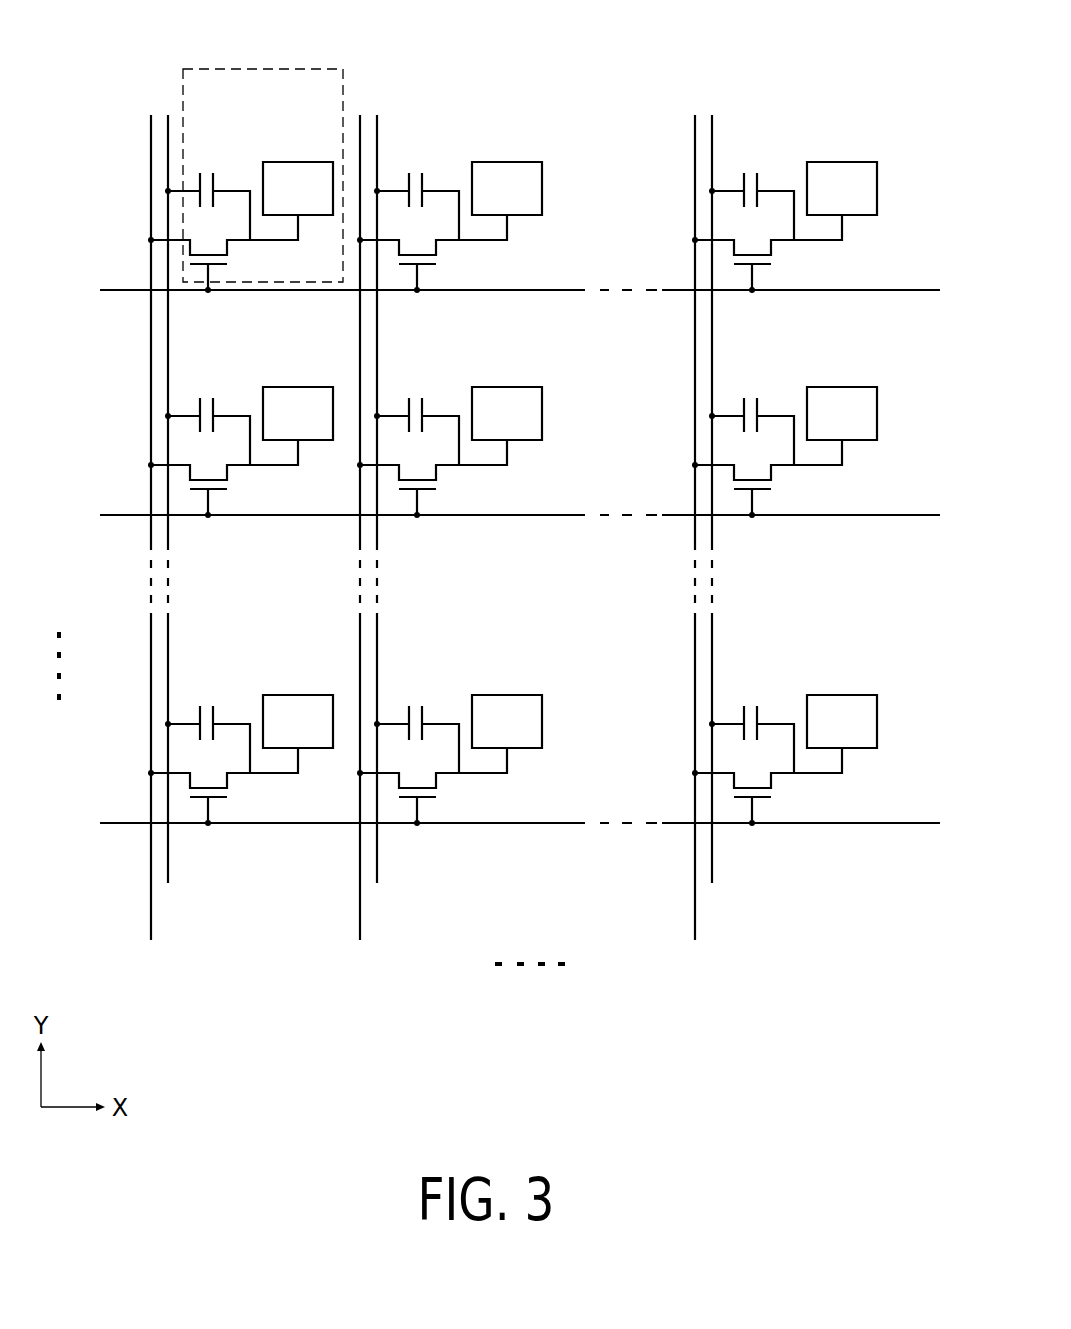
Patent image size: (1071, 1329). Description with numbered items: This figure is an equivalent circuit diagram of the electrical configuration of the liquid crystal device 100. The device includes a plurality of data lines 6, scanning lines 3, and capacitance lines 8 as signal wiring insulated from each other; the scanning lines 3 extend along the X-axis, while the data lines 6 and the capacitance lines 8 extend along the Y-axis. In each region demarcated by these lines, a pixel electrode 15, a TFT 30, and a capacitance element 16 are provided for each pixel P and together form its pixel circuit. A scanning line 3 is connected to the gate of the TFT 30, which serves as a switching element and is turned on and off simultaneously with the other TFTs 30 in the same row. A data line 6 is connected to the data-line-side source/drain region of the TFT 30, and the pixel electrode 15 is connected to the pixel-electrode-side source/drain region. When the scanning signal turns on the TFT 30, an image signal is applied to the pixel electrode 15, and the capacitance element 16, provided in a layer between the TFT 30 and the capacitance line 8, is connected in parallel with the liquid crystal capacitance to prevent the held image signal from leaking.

The liquid crystal device 100 is at (675, 78).
The scanning line 3 is at (921, 290).
The data line 6 is at (151, 900).
The capacitance line 8 is at (168, 858).
The pixel electrode 15 is at (570, 420).
The capacitance element 16 is at (479, 425).
The TFT 30 is at (510, 520).
The pixel P is at (266, 67).